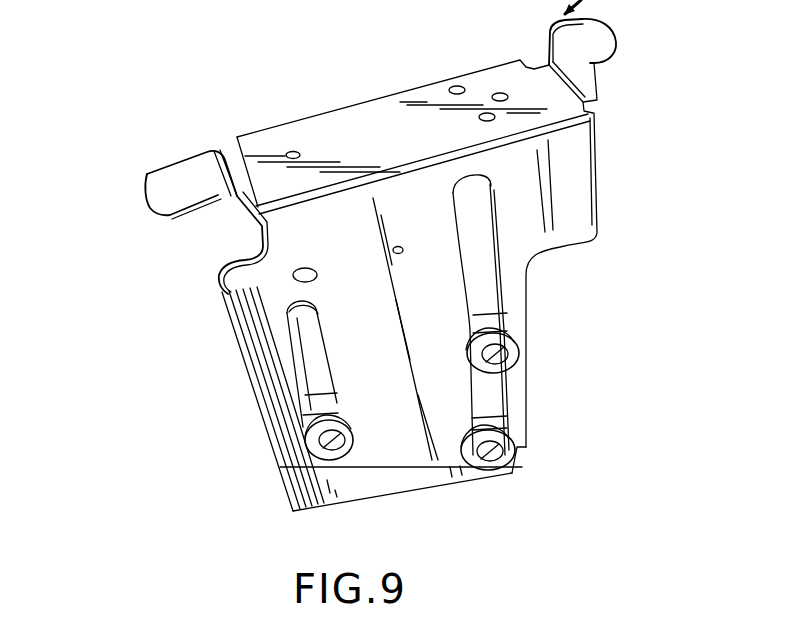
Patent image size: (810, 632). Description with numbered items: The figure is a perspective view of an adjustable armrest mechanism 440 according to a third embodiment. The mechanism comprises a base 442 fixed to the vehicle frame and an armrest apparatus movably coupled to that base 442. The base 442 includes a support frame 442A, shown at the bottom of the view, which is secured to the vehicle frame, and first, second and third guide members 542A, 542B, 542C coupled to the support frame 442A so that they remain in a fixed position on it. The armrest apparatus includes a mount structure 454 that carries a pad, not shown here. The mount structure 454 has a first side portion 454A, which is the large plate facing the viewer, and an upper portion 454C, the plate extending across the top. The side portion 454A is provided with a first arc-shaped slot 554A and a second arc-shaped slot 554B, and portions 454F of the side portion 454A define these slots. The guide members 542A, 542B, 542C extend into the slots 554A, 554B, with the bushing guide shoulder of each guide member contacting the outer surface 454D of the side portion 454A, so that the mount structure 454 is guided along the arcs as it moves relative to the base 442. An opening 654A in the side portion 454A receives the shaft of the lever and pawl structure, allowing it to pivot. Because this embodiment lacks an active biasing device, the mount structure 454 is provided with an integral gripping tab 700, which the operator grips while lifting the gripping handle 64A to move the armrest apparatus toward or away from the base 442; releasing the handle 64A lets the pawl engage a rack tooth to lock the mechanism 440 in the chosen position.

The adjustable armrest mechanism 440 is at (668, 66).
The mount structure 454 is at (577, 214).
The first side portion 454A is at (577, 178).
The upper portion 454C is at (309, 131).
The outer surface 454D is at (258, 286).
The portions 454F is at (490, 187).
The gripping handle 64A is at (168, 180).
The gripping tab 700 is at (593, 38).
The base 442 is at (372, 481).
The support frame 442A is at (427, 474).
The first arc-shaped slot 554A is at (498, 307).
The second arc-shaped slot 554B is at (308, 384).
The opening 654A is at (297, 313).
The first guide member 542A is at (526, 345).
The second guide member 542B is at (522, 444).
The third guide member 542C is at (300, 452).